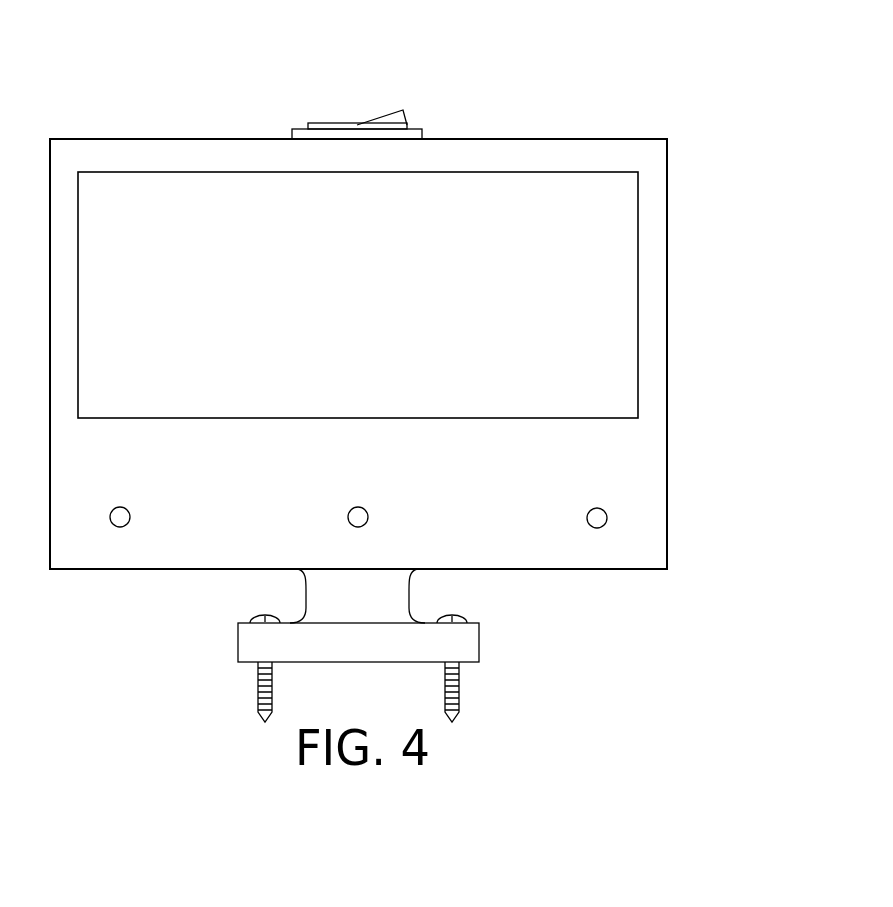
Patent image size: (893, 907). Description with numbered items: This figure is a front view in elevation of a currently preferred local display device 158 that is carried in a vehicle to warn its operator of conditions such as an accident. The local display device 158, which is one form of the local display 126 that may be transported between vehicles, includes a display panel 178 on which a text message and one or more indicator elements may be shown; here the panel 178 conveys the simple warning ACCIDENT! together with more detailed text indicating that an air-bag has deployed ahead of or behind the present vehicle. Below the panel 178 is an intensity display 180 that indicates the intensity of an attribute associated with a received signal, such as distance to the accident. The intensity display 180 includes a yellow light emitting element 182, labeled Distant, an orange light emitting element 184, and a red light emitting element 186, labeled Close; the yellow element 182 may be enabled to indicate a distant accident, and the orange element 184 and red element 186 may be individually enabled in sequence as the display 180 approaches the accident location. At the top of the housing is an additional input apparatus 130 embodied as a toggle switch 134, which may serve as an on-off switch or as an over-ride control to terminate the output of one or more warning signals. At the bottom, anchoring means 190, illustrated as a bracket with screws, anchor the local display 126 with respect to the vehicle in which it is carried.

The local display 126 is at (716, 188).
The additional input apparatus 130 is at (287, 73).
The toggle switch 134 is at (401, 110).
The local display device 158 is at (728, 253).
The display panel 178 is at (617, 348).
The intensity display 180 is at (737, 502).
The yellow light emitting element 182 is at (120, 527).
The orange light emitting element 184 is at (358, 527).
The red light emitting element 186 is at (597, 528).
The anchoring means 190 is at (530, 673).